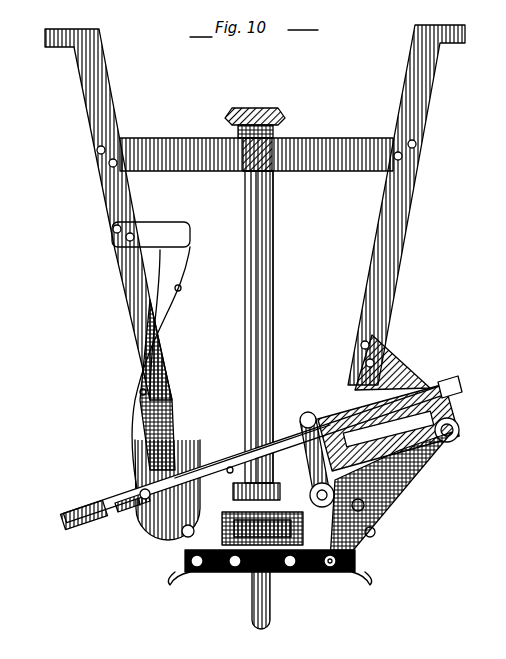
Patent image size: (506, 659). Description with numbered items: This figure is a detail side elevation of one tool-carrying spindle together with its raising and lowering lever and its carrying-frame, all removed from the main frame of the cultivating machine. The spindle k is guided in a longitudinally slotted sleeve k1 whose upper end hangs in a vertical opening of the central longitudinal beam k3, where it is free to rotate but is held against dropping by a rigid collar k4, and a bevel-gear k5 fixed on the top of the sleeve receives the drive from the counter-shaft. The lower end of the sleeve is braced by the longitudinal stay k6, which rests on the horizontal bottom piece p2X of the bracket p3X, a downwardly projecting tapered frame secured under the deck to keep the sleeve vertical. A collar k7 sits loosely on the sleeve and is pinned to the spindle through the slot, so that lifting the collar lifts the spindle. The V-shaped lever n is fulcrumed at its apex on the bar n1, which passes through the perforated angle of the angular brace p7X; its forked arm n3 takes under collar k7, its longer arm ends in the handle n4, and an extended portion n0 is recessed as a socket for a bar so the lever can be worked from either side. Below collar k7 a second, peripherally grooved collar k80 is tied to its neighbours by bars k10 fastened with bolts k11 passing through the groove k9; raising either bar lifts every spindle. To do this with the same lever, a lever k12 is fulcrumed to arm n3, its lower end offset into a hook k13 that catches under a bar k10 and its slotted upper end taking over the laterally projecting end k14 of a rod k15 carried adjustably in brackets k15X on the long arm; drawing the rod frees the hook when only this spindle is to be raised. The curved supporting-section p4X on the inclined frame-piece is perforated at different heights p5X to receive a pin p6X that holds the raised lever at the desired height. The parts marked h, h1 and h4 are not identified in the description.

The frame h is at (274, 212).
The cross bar of frame h1 is at (305, 391).
The bevel-gear k5 is at (228, 116).
The rigid collar k4 is at (275, 130).
The beam k3 is at (246, 176).
The sleeve k1 is at (262, 410).
The tool-operating spindle k is at (260, 622).
The curved supporting-section p4X is at (172, 312).
The perforation p5X is at (148, 392).
The pin p6X is at (140, 520).
The rod h4 is at (72, 525).
The bracket k15X is at (144, 492).
The rod k15 is at (240, 455).
The collar k7 is at (240, 468).
The laterally-projecting end k14 is at (306, 415).
The handle n4 is at (305, 502).
The V-shaped lever n is at (330, 418).
The bar n1 is at (460, 432).
The extended portion n0 is at (430, 385).
The lever k12 is at (460, 386).
The bracket p3X is at (366, 305).
The angular brace p7X is at (372, 540).
The arm n3 is at (375, 500).
The bar k10 is at (380, 510).
The collar k80 is at (235, 522).
The peripheral groove k9 is at (240, 574).
The stay k6 is at (185, 578).
The bolt k11 is at (180, 548).
The hook k13 is at (318, 574).
The horizontal bottom piece p2X is at (235, 574).